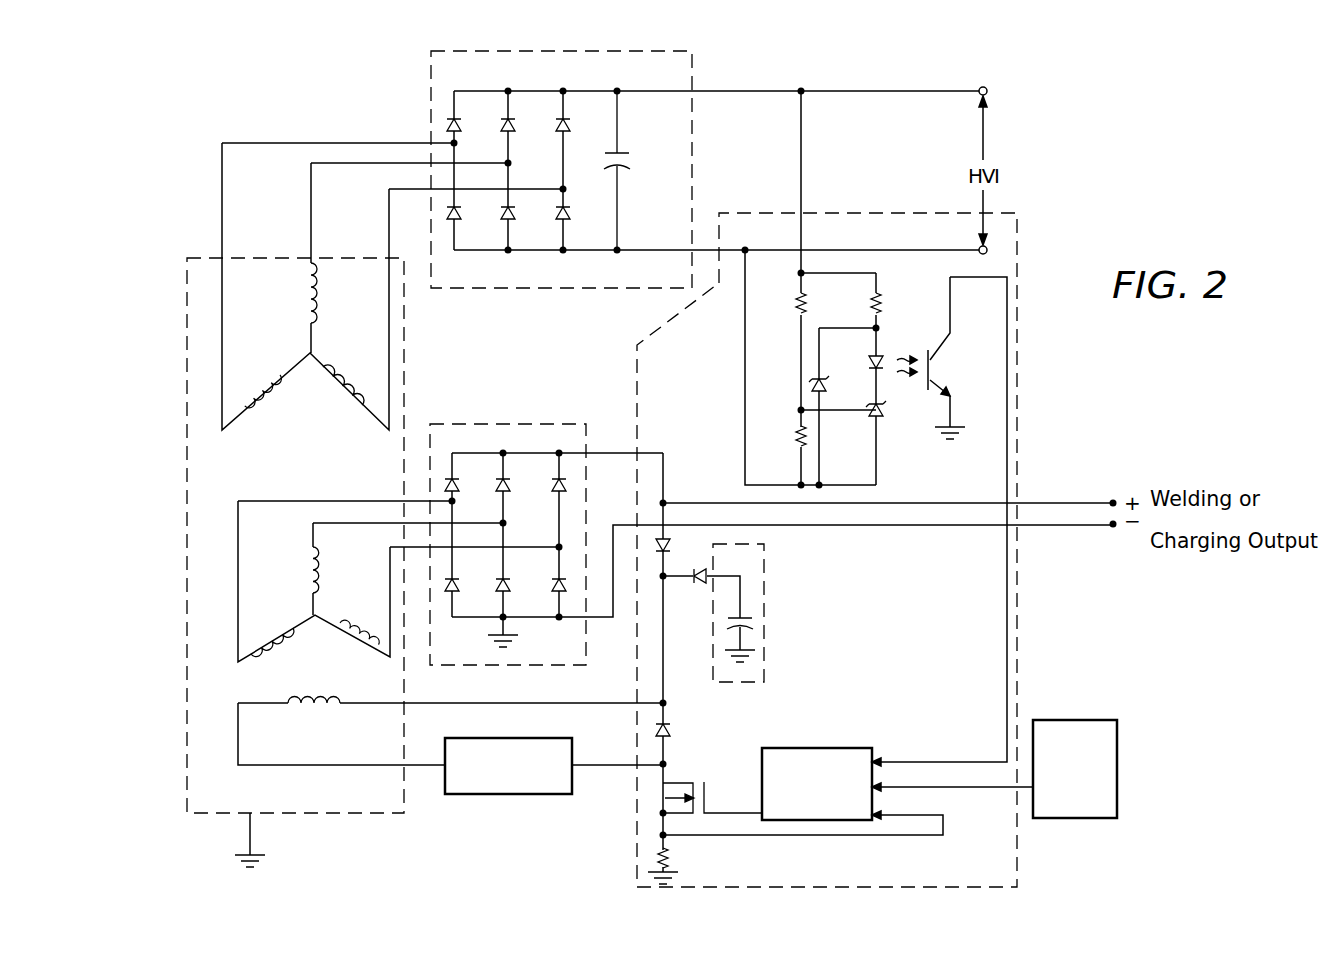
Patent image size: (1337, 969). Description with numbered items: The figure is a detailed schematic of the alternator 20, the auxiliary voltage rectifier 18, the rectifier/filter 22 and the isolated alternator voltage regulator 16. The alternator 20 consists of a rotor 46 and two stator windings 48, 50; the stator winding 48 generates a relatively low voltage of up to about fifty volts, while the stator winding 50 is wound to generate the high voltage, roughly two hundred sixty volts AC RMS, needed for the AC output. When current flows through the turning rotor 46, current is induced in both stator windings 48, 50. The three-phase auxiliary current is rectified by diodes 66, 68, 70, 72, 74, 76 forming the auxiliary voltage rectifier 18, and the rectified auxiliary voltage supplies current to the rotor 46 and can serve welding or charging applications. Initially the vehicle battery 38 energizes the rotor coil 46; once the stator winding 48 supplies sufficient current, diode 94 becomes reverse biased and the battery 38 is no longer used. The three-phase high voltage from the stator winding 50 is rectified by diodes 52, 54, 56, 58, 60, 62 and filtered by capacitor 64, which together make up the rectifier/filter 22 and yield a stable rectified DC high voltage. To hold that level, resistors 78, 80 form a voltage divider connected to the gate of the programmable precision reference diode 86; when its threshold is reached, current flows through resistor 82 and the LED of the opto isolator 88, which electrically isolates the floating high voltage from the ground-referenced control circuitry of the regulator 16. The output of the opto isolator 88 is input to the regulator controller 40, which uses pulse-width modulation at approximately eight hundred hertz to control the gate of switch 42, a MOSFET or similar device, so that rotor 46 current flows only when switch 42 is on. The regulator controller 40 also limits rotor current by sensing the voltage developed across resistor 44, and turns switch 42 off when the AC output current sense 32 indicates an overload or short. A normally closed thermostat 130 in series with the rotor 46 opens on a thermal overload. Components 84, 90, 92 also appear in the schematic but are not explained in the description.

The isolated alternator voltage regulator 16 is at (1007, 849).
The auxiliary voltage rectifier 18 is at (584, 424).
The alternator 20 is at (400, 812).
The rectifier/filter 22 is at (686, 87).
The AC output current sense 32 is at (1088, 720).
The battery 38 is at (752, 616).
The regulator controller 40 is at (838, 747).
The switch 42 is at (712, 797).
The resistor 44 is at (670, 857).
The rotor 46 is at (291, 705).
The stator winding 48 is at (322, 609).
The stator winding 50 is at (316, 348).
The diode 52 is at (459, 120).
The diode 54 is at (513, 120).
The diode 56 is at (568, 124).
The diode 58 is at (459, 211).
The diode 60 is at (513, 211).
The diode 62 is at (568, 211).
The capacitor 64 is at (631, 162).
The diode 66 is at (457, 480).
The diode 68 is at (508, 480).
The diode 70 is at (565, 481).
The diode 72 is at (457, 582).
The diode 74 is at (508, 582).
The diode 76 is at (565, 583).
The resistor 78 is at (798, 315).
The resistor 80 is at (798, 450).
The resistor 82 is at (877, 300).
The zener diode 84 is at (824, 387).
The Programmable Precision Reference diode 86 is at (882, 413).
The opto isolator 88 is at (885, 358).
The diode 90 is at (669, 728).
The diode 92 is at (670, 538).
The diode 94 is at (702, 583).
The thermostat 130 is at (507, 795).